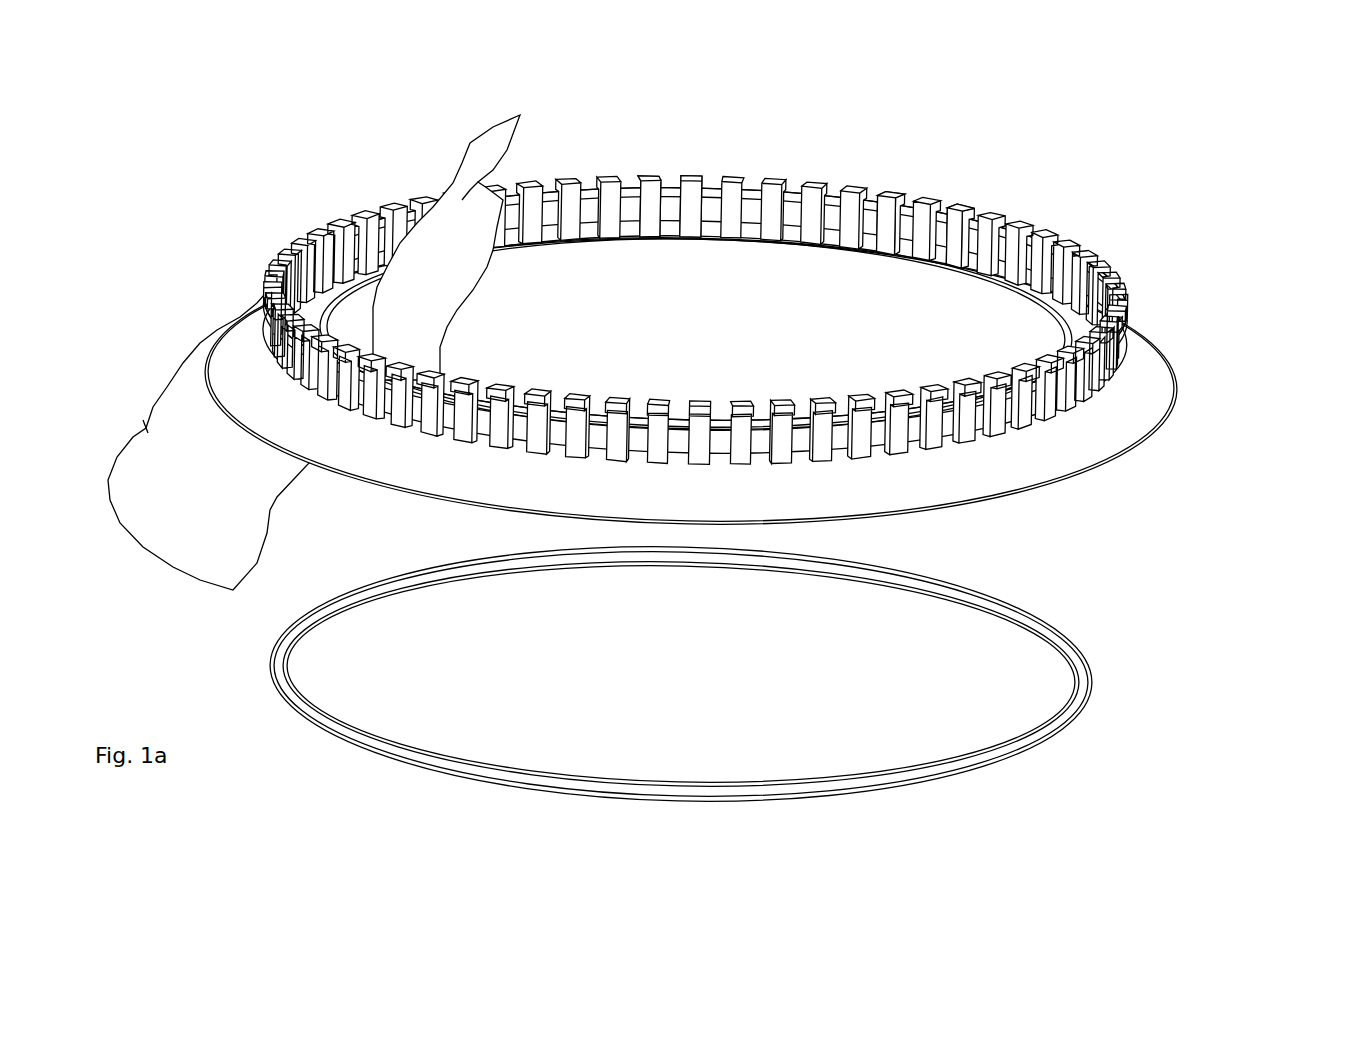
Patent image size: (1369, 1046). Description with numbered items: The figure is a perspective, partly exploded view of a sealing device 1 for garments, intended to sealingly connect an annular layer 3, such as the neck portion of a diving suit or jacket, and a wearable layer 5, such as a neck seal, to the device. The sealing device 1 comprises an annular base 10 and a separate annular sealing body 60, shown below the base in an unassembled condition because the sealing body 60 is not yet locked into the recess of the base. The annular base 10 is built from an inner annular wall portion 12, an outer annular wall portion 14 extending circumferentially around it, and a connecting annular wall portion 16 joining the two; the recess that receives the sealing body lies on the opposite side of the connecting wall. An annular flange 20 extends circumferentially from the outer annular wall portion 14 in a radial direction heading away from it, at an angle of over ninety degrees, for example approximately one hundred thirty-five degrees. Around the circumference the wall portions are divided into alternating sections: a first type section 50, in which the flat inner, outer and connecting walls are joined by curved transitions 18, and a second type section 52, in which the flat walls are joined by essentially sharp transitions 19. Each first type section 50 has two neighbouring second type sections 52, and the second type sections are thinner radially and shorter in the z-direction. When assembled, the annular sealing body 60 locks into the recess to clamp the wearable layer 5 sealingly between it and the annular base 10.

The sealing device 1 is at (892, 143).
The annular layer 3 is at (125, 383).
The wearable layer 5 is at (410, 157).
The annular base 10 is at (1132, 246).
The inner annular wall portion 12 is at (1007, 280).
The outer annular wall portion 14 is at (1043, 423).
The connecting annular wall portion 16 is at (813, 180).
The curved transitions 18 is at (970, 235).
The sharp transitions 19 is at (895, 213).
The annular flange 20 is at (1135, 408).
The first type section 50 is at (643, 145).
The second type section 52 is at (663, 154).
The annular sealing body 60 is at (1127, 681).